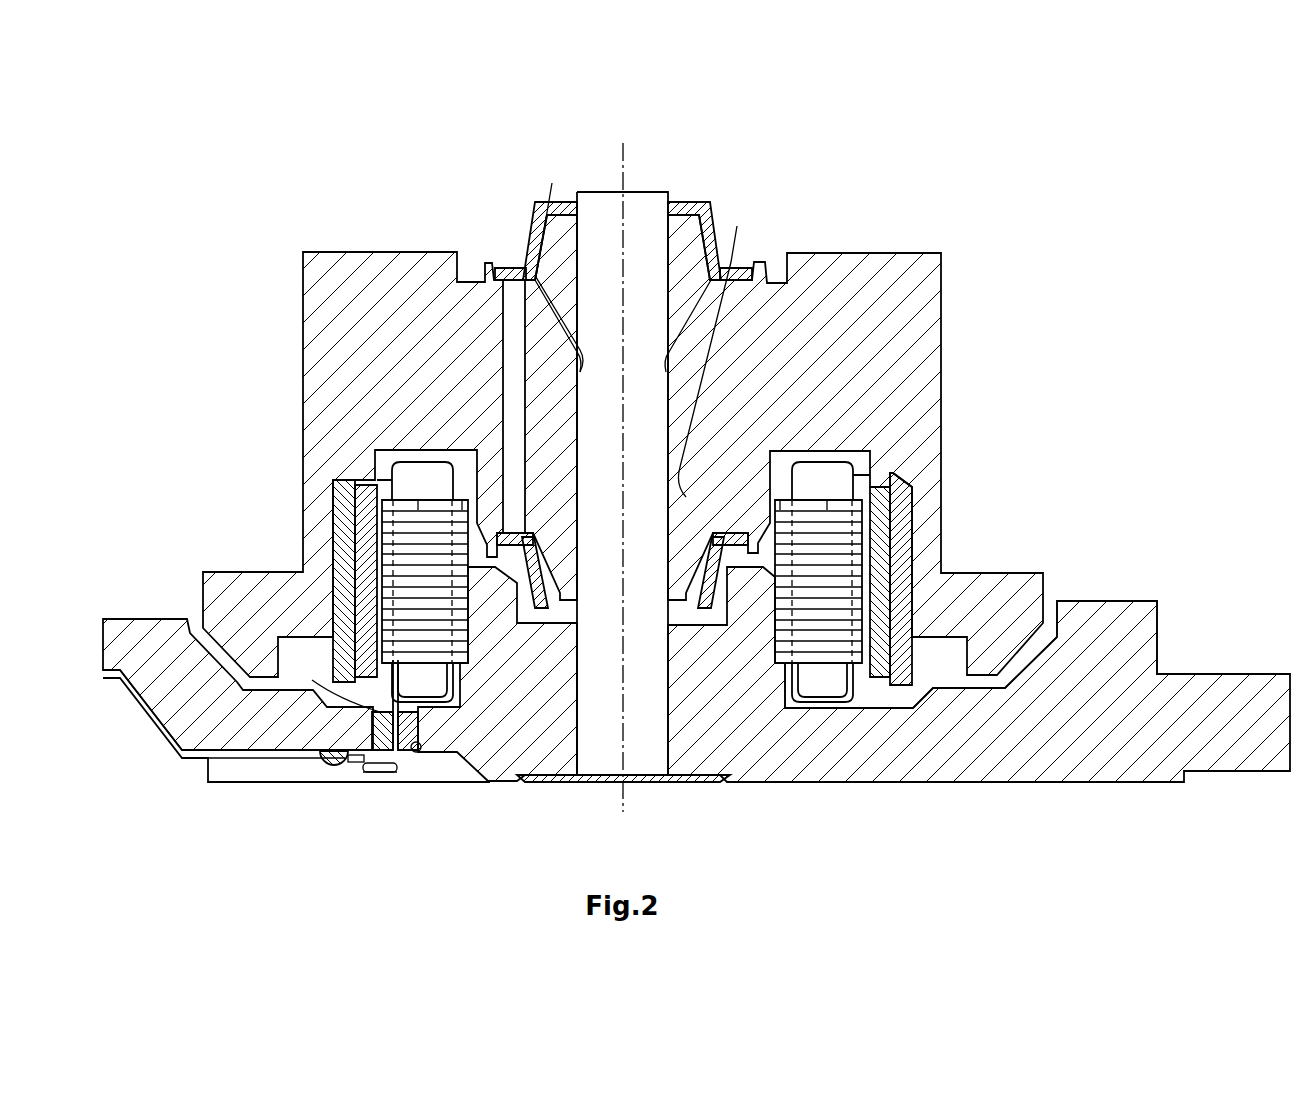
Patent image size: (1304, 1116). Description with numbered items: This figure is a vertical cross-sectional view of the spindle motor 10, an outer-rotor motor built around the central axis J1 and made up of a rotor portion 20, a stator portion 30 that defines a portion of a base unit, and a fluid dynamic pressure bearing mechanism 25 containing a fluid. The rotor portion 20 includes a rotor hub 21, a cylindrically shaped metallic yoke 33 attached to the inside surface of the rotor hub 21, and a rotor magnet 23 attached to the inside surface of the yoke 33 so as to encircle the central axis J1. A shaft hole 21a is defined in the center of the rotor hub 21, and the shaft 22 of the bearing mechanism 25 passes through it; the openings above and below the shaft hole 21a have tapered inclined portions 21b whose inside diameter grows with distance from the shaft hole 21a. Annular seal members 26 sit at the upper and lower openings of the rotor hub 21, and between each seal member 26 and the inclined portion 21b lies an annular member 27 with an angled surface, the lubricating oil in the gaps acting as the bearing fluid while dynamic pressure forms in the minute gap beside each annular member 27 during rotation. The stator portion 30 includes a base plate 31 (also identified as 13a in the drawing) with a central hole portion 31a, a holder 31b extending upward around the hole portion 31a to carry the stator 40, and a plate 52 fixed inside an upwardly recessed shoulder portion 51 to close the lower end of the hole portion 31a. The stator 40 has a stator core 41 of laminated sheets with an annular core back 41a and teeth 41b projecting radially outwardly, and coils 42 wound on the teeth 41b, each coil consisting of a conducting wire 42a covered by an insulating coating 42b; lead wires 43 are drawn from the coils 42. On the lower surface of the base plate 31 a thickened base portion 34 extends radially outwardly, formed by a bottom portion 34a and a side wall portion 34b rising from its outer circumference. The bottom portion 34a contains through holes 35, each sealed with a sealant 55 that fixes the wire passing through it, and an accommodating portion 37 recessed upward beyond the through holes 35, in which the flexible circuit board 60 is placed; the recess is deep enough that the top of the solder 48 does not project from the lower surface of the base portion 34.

The spindle motor 10 is at (607, 50).
The central axis J1 is at (622, 168).
The rotor portion 20 is at (623, 473).
The rotor hub 21 is at (860, 252).
The shaft hole 21a is at (557, 260).
The inclined portions 21b is at (723, 344).
The shaft 22 is at (648, 190).
The rotor magnet 23 is at (357, 535).
The fluid dynamic pressure bearing mechanism 25 is at (607, 473).
The seal members 26 is at (535, 212).
The annular member 27 is at (545, 263).
The stator portion 30 is at (222, 680).
The base plate 31 is at (859, 717).
The base plate 13a is at (854, 674).
The hole portion 31a is at (580, 768).
The holder 31b is at (780, 683).
The yoke 33 is at (337, 558).
The base portion 34 is at (1094, 734).
The bottom portion 34a is at (918, 782).
The side wall portion 34b is at (153, 713).
The through holes 35 is at (414, 752).
The accommodating portion 37 is at (218, 752).
The stator 40 is at (621, 636).
The stator core 41 is at (621, 524).
The core back 41a is at (462, 500).
The teeth 41b is at (418, 500).
The coils 42 is at (621, 657).
The conducting wire 42a is at (353, 764).
The insulating coating 42b is at (380, 772).
The lead wires 43 is at (438, 827).
The solder 48 is at (333, 772).
The shoulder portion 51 is at (725, 782).
The plate 52 is at (665, 782).
The sealant 55 is at (335, 679).
The flexible circuit board 60 is at (167, 745).